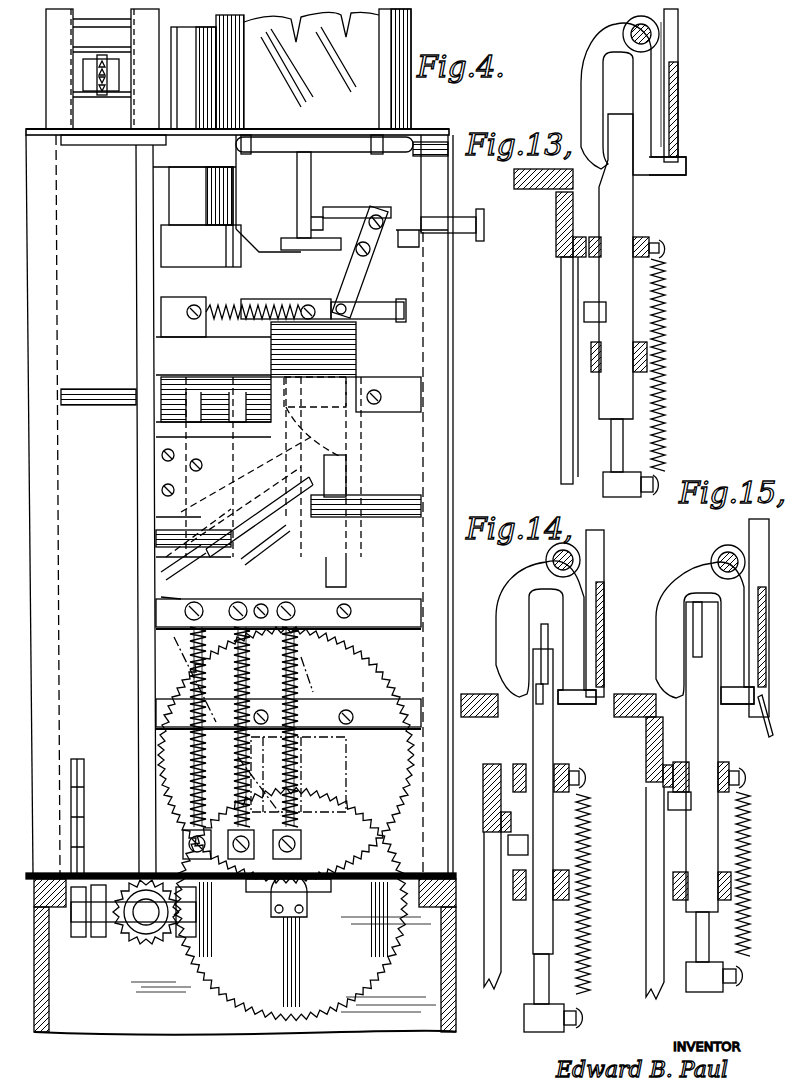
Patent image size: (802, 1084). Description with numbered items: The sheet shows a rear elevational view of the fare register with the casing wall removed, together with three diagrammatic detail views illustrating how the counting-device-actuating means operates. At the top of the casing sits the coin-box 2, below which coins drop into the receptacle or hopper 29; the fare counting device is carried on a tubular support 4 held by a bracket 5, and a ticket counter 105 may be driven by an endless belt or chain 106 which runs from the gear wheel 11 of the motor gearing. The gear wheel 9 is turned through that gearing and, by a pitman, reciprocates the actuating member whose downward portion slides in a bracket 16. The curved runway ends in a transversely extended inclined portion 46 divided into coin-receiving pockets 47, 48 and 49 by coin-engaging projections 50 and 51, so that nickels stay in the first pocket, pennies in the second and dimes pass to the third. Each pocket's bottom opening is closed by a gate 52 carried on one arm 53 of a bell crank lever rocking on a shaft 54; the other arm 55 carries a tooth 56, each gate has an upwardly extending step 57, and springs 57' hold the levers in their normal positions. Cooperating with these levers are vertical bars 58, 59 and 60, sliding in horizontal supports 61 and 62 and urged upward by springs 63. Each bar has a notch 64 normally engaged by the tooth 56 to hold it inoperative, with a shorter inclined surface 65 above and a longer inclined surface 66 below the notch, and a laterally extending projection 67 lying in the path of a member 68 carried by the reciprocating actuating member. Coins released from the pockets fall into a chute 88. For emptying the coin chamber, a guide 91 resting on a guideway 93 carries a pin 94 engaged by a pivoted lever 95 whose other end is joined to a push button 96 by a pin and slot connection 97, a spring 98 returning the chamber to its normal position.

In FIG. 4, the coin-box 2 is at (410, 18).
In FIG. 4, the tubular support 4 is at (185, 190).
In FIG. 4, the bracket 5 is at (201, 246).
In FIG. 4, the gear wheel 9 is at (392, 815).
In FIG. 4, the gear wheel 11 is at (243, 985).
In FIG. 4, the bracket 16 is at (315, 793).
In FIG. 4, the receptacle or hopper 29 is at (263, 215).
In FIG. 4, the inclined portion 46 is at (160, 578).
In FIG. 4, the coin-receiving pocket 47 is at (285, 472).
In FIG. 4, the coin-receiving pocket 48 is at (236, 518).
In FIG. 4, the coin-receiving pocket 49 is at (188, 542).
In FIG. 4, the coin-engaging projection 50 is at (265, 457).
In FIG. 4, the coin-engaging projection 51 is at (240, 494).
In FIG. 4, the gate 52 is at (248, 536).
In FIG. 13, the gate 52 is at (672, 178).
In FIG. 14, the gate 52 is at (590, 712).
In FIG. 15, the gate 52 is at (740, 710).
In FIG. 13, the arm of bell crank lever 53 is at (648, 95).
In FIG. 14, the arm of bell crank lever 53 is at (585, 592).
In FIG. 15, the arm of bell crank lever 53 is at (735, 600).
In FIG. 4, the shaft 54 is at (100, 392).
In FIG. 13, the shaft 54 is at (625, 40).
In FIG. 14, the shaft 54 is at (548, 560).
In FIG. 15, the shaft 54 is at (712, 560).
In FIG. 13, the arm of bell crank lever 55 is at (580, 77).
In FIG. 14, the arm of bell crank lever 55 is at (498, 594).
In FIG. 15, the arm of bell crank lever 55 is at (658, 601).
In FIG. 13, the tooth 56 is at (593, 172).
In FIG. 14, the tooth 56 is at (508, 676).
In FIG. 15, the tooth 56 is at (670, 702).
In FIG. 13, the step 57 is at (619, 177).
In FIG. 14, the step 57 is at (614, 715).
In FIG. 15, the step 57 is at (761, 696).
In FIG. 13, the spring 57' is at (556, 112).
In FIG. 14, the spring 57' is at (478, 678).
In FIG. 15, the spring 57' is at (635, 695).
In FIG. 4, the vertical bar 58 is at (288, 573).
In FIG. 4, the vertical bar 59 is at (236, 588).
In FIG. 4, the vertical bar 60 is at (198, 598).
In FIG. 13, the vertical bar 60 is at (620, 325).
In FIG. 14, the vertical bar 60 is at (553, 840).
In FIG. 15, the vertical bar 60 is at (712, 880).
In FIG. 4, the horizontal support 61 is at (372, 600).
In FIG. 13, the horizontal support 61 is at (642, 243).
In FIG. 14, the horizontal support 61 is at (566, 768).
In FIG. 15, the horizontal support 61 is at (730, 776).
In FIG. 4, the horizontal support 62 is at (384, 726).
In FIG. 13, the horizontal support 62 is at (630, 362).
In FIG. 14, the horizontal support 62 is at (572, 874).
In FIG. 15, the horizontal support 62 is at (740, 900).
In FIG. 4, the spring 63 is at (295, 674).
In FIG. 13, the spring 63 is at (668, 418).
In FIG. 14, the spring 63 is at (590, 930).
In FIG. 15, the spring 63 is at (752, 873).
In FIG. 14, the notch 64 is at (538, 707).
In FIG. 15, the notch 64 is at (696, 650).
In FIG. 14, the inclined surface 65 is at (544, 648).
In FIG. 15, the inclined surface 65 is at (680, 650).
In FIG. 14, the inclined surface 66 is at (525, 706).
In FIG. 15, the inclined surface 66 is at (716, 700).
In FIG. 13, the laterally extending projection 67 is at (600, 312).
In FIG. 14, the laterally extending projection 67 is at (518, 845).
In FIG. 15, the laterally extending projection 67 is at (690, 805).
In FIG. 14, the member 68 is at (500, 838).
In FIG. 15, the member 68 is at (660, 796).
In FIG. 4, the chute 88 is at (352, 692).
In FIG. 4, the guide 91 is at (322, 308).
In FIG. 4, the guideway 93 is at (365, 330).
In FIG. 4, the pin 94 is at (358, 308).
In FIG. 4, the lever 95 is at (368, 278).
In FIG. 4, the push button 96 is at (460, 220).
In FIG. 4, the pin and slot connection 97 is at (372, 212).
In FIG. 4, the spring 98 is at (228, 322).
In FIG. 4, the ticket counter 105 is at (45, 72).
In FIG. 4, the endless belt or chain 106 is at (85, 816).